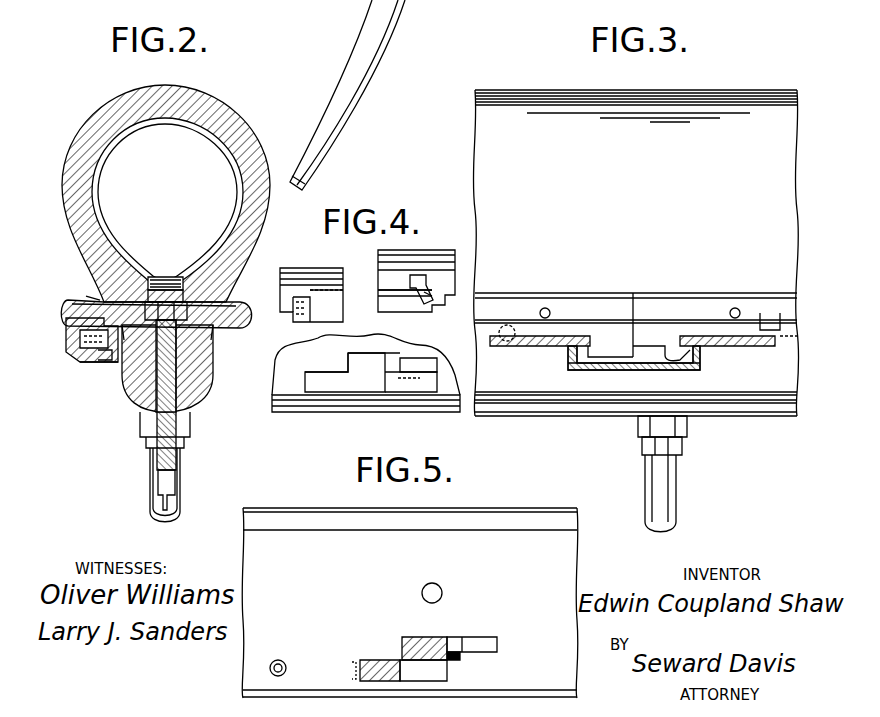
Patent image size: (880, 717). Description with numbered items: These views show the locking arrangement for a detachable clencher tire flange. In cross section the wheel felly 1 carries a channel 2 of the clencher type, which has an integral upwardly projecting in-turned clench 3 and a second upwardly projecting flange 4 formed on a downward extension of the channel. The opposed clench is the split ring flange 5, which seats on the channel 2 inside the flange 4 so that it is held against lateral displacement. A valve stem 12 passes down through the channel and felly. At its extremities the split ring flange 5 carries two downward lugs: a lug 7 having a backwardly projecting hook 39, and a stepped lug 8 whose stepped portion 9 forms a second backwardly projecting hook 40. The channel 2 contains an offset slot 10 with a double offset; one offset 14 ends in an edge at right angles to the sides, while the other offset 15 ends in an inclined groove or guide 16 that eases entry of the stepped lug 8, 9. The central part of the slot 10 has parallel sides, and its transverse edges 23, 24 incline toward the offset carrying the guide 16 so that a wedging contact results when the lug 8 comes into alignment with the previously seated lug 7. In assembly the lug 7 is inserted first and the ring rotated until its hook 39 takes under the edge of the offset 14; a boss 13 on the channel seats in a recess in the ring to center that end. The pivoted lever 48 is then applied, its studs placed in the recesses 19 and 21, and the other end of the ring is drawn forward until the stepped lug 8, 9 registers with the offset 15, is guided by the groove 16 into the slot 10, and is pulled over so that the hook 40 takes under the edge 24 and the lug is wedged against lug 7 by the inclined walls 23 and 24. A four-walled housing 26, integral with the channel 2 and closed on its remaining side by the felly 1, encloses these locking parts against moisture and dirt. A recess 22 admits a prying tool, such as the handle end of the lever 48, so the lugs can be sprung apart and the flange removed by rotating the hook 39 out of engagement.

In FIG. 2, the wheel felly 1 is at (200, 378).
In FIG. 3, the wheel felly 1 is at (735, 398).
In FIG. 2, the channel 2 is at (213, 340).
In FIG. 4, the channel 2 is at (288, 372).
In FIG. 3, the channel 2 is at (562, 344).
In FIG. 5, the channel 2 is at (410, 603).
In FIG. 2, the clench flange 3 is at (240, 302).
In FIG. 5, the clench flange 3 is at (540, 520).
In FIG. 2, the secondary flange 4 is at (68, 325).
In FIG. 2, the split ring flange 5 is at (88, 300).
In FIG. 4, the split ring flange 5 is at (296, 268).
In FIG. 4, the lug 7 is at (319, 307).
In FIG. 3, the lug 7 is at (612, 350).
In FIG. 5, the lug 7 is at (356, 670).
In FIG. 2, the stepped lug 8 is at (78, 352).
In FIG. 4, the stepped lug 8 is at (410, 300).
In FIG. 3, the stepped lug 8 is at (682, 350).
In FIG. 5, the stepped lug 8 is at (455, 656).
In FIG. 2, the stepped portion 9 is at (80, 356).
In FIG. 4, the stepped portion 9 is at (388, 302).
In FIG. 4, the offset slot 10 is at (345, 372).
In FIG. 5, the offset slot 10 is at (423, 671).
In FIG. 2, the valve stem 12 is at (182, 462).
In FIG. 3, the valve stem 12 is at (678, 480).
In FIG. 3, the boss 13 is at (508, 345).
In FIG. 5, the boss 13 is at (278, 660).
In FIG. 4, the slot offset 14 is at (302, 392).
In FIG. 5, the slot offset 14 is at (372, 660).
In FIG. 4, the slot offset 15 is at (392, 356).
In FIG. 5, the slot offset 15 is at (430, 637).
In FIG. 4, the inclined groove or guide 16 is at (430, 358).
In FIG. 5, the inclined groove or guide 16 is at (478, 637).
In FIG. 3, the recess 19 is at (548, 308).
In FIG. 3, the recess 21 is at (738, 308).
In FIG. 3, the recess 22 is at (764, 325).
In FIG. 4, the transverse edge 23 is at (348, 368).
In FIG. 4, the transverse edge 24 is at (398, 382).
In FIG. 2, the housing 26 is at (96, 364).
In FIG. 3, the housing 26 is at (626, 366).
In FIG. 4, the hook 39 is at (293, 316).
In FIG. 4, the hook 40 is at (430, 304).
In FIG. 4, the pivoted lever 48 is at (347, 95).